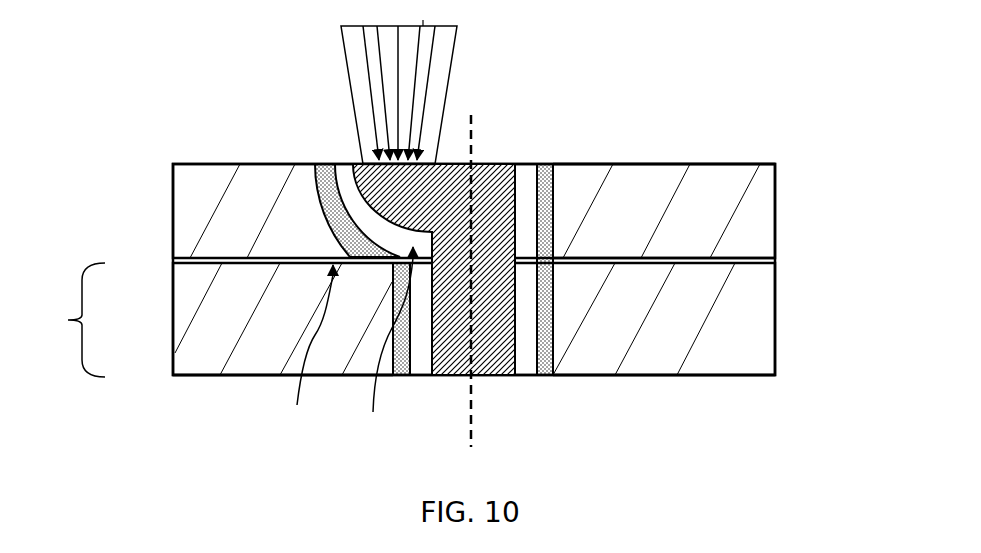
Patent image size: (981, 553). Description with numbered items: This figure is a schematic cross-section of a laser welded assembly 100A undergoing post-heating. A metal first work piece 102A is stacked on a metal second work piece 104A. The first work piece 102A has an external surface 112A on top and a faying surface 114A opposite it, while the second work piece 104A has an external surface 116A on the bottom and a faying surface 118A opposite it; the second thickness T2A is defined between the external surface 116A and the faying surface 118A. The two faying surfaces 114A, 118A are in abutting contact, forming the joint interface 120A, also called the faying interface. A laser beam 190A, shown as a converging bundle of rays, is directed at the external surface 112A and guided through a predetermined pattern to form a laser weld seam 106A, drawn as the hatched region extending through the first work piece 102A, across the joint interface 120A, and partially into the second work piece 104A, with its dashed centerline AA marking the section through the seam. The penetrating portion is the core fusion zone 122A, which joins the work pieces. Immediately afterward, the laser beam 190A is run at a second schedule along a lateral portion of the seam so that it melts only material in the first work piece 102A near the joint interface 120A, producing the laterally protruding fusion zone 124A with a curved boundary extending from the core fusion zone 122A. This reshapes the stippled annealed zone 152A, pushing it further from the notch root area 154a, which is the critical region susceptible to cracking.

The laser welded assembly 100A is at (818, 300).
The first work piece 102A is at (187, 207).
The second work piece 104A is at (205, 285).
The laser weld seam 106A is at (500, 164).
The external surface of the first work piece 112A is at (665, 164).
The faying surface of the first work piece 114A is at (683, 262).
The external surface of the second work piece 116A is at (212, 377).
The faying surface of the second work piece 118A is at (710, 257).
The joint interface 120A is at (305, 350).
The core fusion zone 122A is at (517, 375).
The laterally protruding fusion zone 124A is at (363, 162).
The annealed zone 152A is at (312, 178).
The notch root area 154a is at (381, 344).
The laser beam 190A is at (458, 78).
The section line AA is at (468, 438).
The thickness of second layer T2A is at (68, 321).